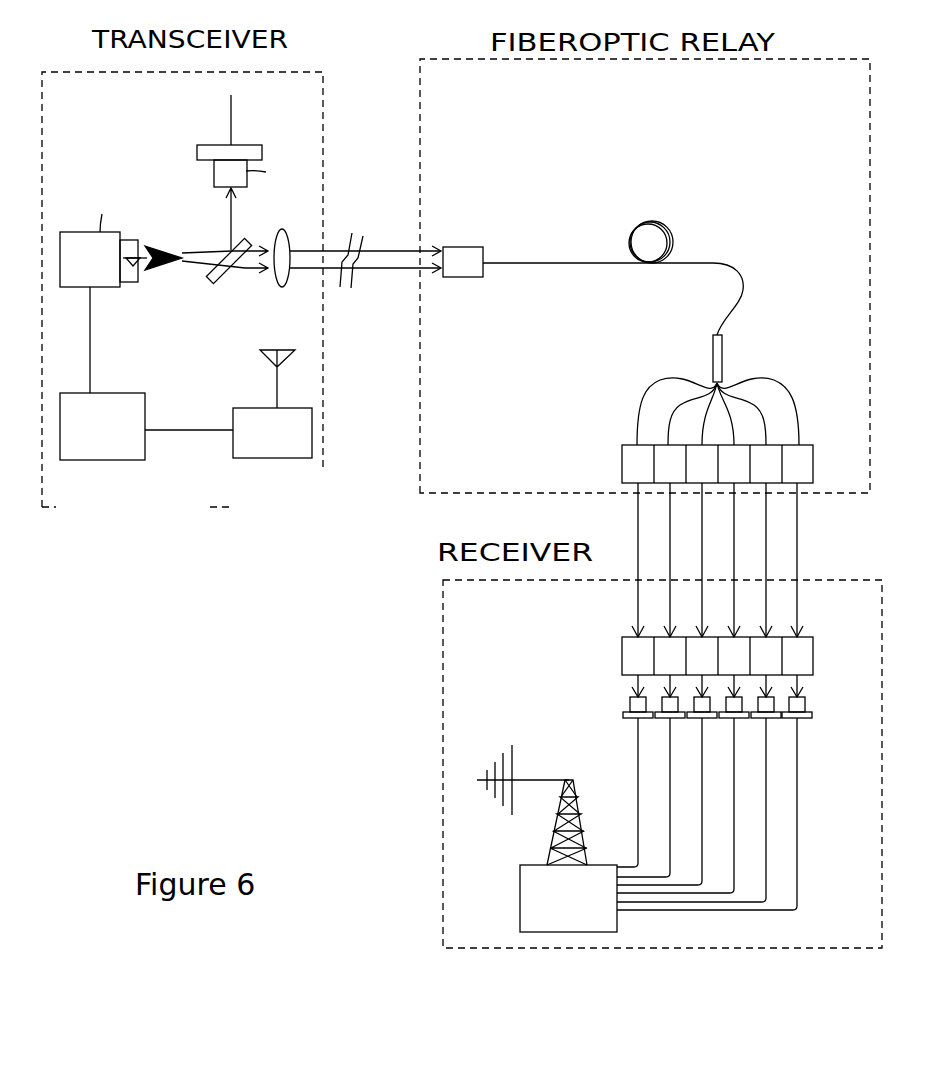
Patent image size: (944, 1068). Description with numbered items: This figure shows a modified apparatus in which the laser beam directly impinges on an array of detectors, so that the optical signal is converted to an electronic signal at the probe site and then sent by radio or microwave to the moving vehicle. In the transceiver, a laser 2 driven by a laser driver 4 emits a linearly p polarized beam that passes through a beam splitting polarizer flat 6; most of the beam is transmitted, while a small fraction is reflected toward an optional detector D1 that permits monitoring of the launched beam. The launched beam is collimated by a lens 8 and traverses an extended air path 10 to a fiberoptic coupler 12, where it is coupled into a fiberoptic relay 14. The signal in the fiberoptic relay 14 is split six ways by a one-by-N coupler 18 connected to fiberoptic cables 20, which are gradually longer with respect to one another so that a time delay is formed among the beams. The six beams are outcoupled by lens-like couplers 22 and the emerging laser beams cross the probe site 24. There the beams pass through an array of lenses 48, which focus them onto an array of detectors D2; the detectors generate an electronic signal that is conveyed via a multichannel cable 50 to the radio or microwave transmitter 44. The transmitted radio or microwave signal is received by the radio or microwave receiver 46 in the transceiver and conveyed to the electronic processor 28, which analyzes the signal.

The laser 2 is at (151, 246).
The laser driver 4 is at (96, 278).
The beam splitting polarizer flat 6 is at (227, 277).
The lens 8 is at (282, 242).
The extended air path 10 is at (365, 242).
The fiberoptic coupler 12 is at (472, 247).
The fiberoptic relay 14 is at (613, 267).
The 1×N coupler 18 is at (740, 358).
The fiberoptic cables 20 is at (746, 411).
The lens-like couplers 22 is at (637, 464).
The probe site 24 is at (756, 560).
The electronic processor 28 is at (105, 478).
The radio or microwave transmitter 44 is at (572, 955).
The radio or microwave receiver 46 is at (268, 472).
The array of lenses 48 is at (639, 666).
The multichannel cable 50 is at (662, 764).
The optional detector D1 is at (290, 172).
The array of detectors D2 is at (622, 713).